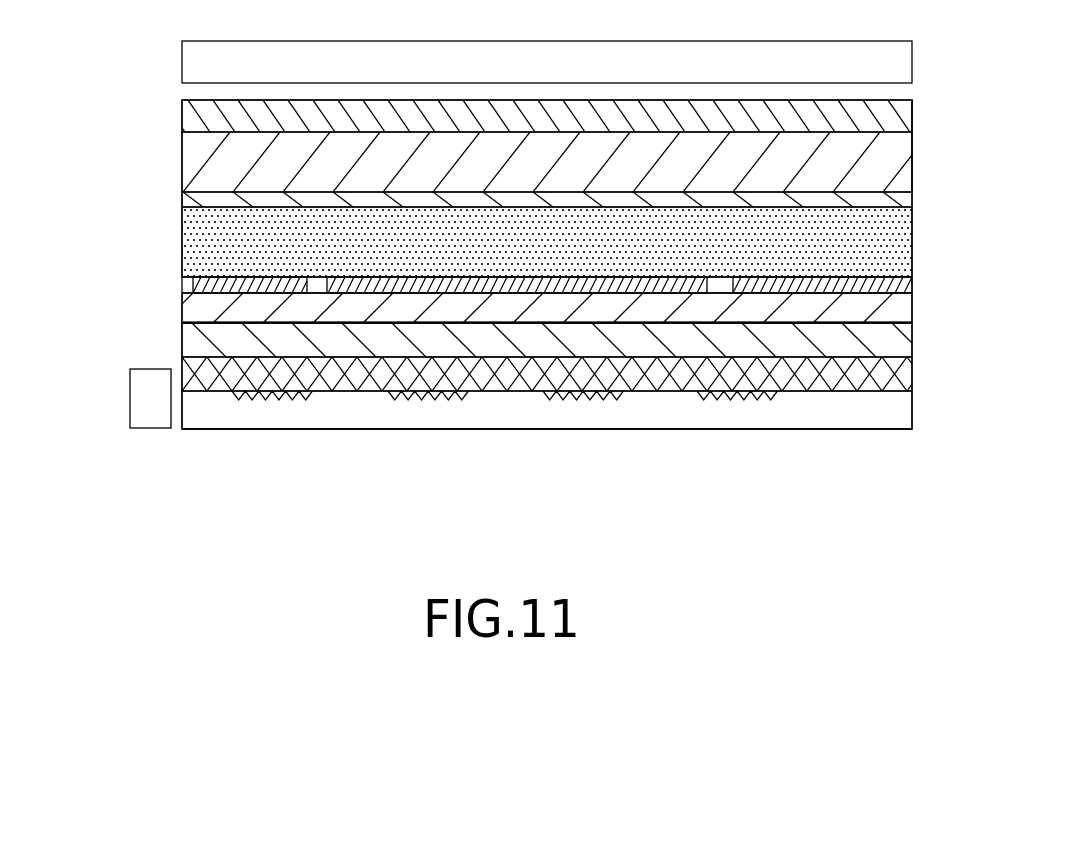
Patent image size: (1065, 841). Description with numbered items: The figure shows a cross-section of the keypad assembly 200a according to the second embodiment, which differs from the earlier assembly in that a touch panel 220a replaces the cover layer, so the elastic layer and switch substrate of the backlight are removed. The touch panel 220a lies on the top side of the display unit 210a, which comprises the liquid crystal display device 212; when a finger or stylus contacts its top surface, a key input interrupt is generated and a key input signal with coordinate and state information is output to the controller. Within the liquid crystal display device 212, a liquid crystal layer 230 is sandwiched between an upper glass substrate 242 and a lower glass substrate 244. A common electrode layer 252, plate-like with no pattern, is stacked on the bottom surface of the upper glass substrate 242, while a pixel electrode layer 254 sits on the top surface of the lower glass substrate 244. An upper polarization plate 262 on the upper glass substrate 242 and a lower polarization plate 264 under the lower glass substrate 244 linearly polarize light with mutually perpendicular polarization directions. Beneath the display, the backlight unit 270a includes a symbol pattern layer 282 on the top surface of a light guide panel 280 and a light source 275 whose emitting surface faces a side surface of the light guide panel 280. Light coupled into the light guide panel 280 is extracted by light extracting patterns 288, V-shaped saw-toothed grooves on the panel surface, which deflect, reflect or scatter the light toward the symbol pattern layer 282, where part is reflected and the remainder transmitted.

The keypad assembly 200a is at (578, 496).
The display unit 210a is at (931, 42).
The liquid crystal display device 212 is at (926, 151).
The touch panel 220a is at (193, 65).
The liquid crystal layer 230 is at (193, 233).
The upper glass substrate 242 is at (193, 160).
The lower glass substrate 244 is at (195, 303).
The common electrode layer 252 is at (193, 197).
The pixel electrode layer 254 is at (179, 283).
The upper polarization plate 262 is at (193, 117).
The lower polarization plate 264 is at (193, 340).
The backlight unit 270a is at (931, 327).
The light source 275 is at (140, 403).
The light guide panel 280 is at (181, 412).
The symbol pattern layer 282 is at (362, 383).
The light extracting patterns 288 is at (310, 387).